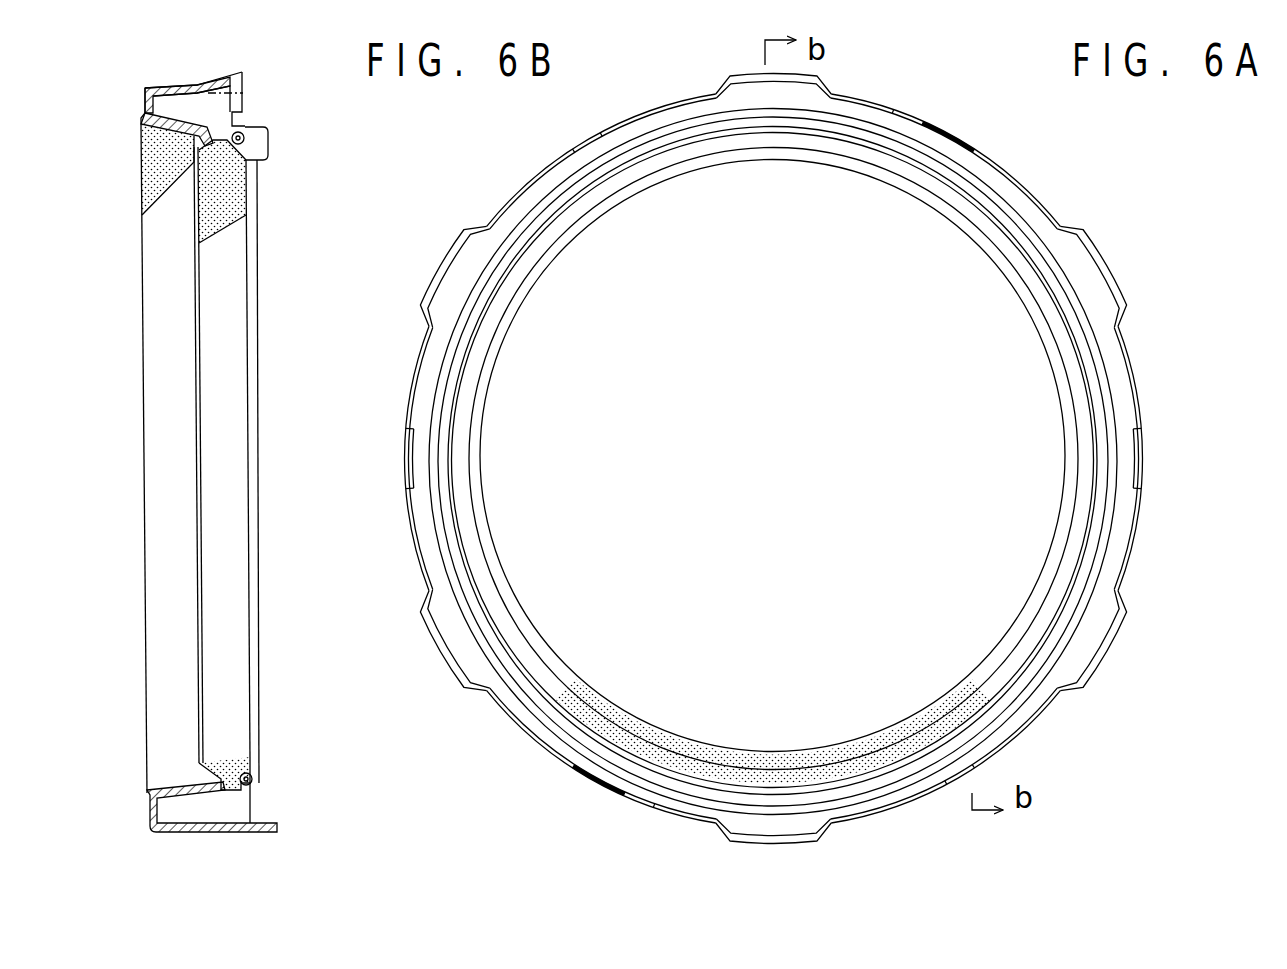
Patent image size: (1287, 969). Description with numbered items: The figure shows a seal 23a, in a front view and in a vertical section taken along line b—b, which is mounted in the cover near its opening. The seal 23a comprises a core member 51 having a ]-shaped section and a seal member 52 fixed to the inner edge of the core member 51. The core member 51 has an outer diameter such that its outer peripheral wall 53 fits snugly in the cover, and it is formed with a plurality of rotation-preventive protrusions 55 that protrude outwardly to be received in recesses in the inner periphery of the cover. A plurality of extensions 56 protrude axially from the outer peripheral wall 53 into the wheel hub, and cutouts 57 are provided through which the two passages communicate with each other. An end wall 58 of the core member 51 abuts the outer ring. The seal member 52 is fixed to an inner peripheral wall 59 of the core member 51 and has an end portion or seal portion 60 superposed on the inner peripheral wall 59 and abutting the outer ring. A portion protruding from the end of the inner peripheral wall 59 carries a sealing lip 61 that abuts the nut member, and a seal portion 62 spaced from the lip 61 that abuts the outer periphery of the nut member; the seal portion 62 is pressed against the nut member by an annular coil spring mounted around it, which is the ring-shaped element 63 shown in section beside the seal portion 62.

In FIG. 6A, the seal 23a is at (1036, 184).
In FIG. 6B, the seal 23a is at (165, 82).
In FIG. 6A, the core member 51 is at (864, 93).
In FIG. 6B, the core member 51 is at (188, 88).
In FIG. 6A, the seal member 52 is at (758, 152).
In FIG. 6B, the seal member 52 is at (183, 274).
In FIG. 6A, the outer peripheral wall 53 is at (1130, 352).
In FIG. 6B, the outer peripheral wall 53 is at (148, 89).
In FIG. 6A, the rotation-preventive protrusions 55 is at (738, 71).
In FIG. 6B, the rotation-preventive protrusions 55 is at (240, 76).
In FIG. 6B, the extensions 56 is at (277, 828).
In FIG. 6A, the cutouts 57 is at (950, 132).
In FIG. 6A, the end wall 58 is at (1112, 537).
In FIG. 6B, the end wall 58 is at (146, 104).
In FIG. 6B, the inner peripheral wall 59 is at (200, 110).
In FIG. 6B, the seal portion 60 is at (140, 124).
In FIG. 6B, the sealing lip 61 is at (198, 148).
In FIG. 6A, the seal portion 62 is at (612, 216).
In FIG. 6B, the seal portion 62 is at (252, 160).
In FIG. 6B, the O-ring 63 is at (253, 118).